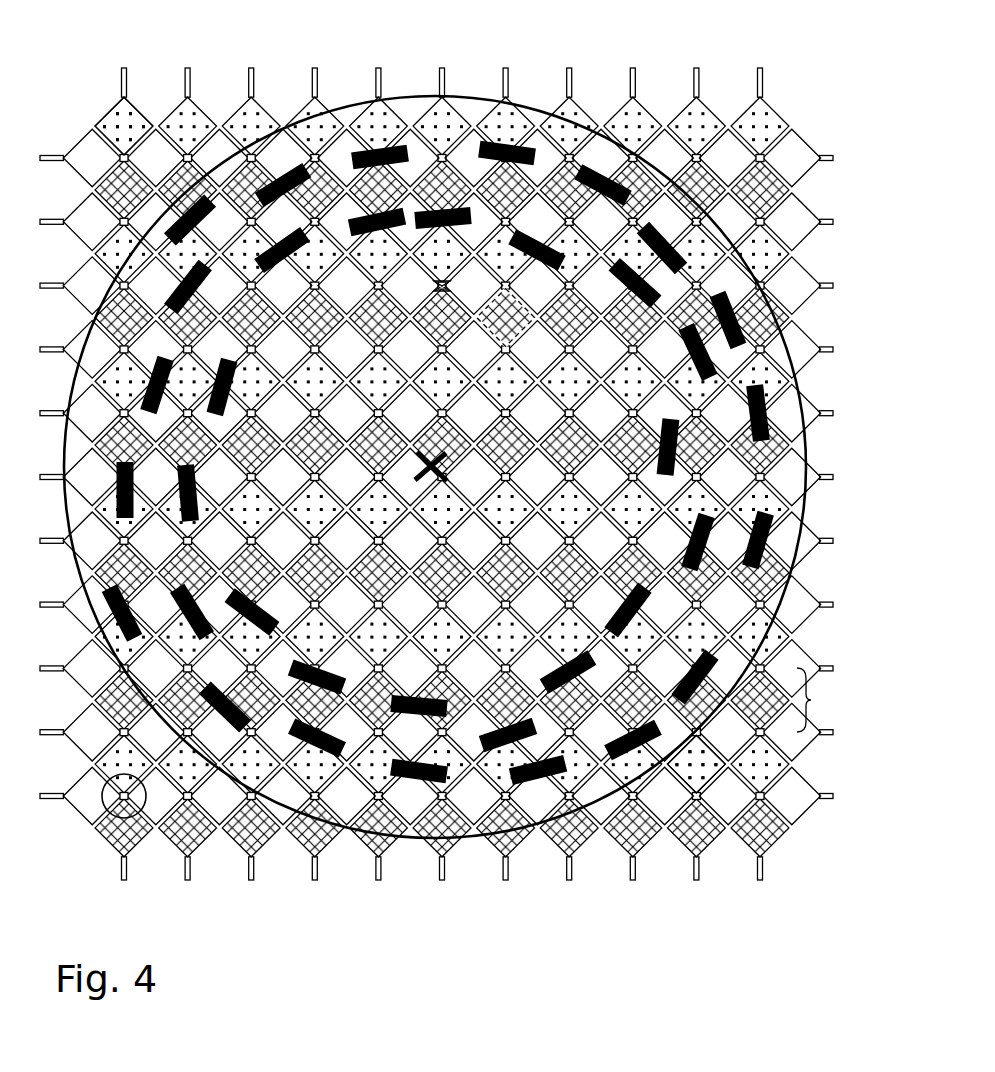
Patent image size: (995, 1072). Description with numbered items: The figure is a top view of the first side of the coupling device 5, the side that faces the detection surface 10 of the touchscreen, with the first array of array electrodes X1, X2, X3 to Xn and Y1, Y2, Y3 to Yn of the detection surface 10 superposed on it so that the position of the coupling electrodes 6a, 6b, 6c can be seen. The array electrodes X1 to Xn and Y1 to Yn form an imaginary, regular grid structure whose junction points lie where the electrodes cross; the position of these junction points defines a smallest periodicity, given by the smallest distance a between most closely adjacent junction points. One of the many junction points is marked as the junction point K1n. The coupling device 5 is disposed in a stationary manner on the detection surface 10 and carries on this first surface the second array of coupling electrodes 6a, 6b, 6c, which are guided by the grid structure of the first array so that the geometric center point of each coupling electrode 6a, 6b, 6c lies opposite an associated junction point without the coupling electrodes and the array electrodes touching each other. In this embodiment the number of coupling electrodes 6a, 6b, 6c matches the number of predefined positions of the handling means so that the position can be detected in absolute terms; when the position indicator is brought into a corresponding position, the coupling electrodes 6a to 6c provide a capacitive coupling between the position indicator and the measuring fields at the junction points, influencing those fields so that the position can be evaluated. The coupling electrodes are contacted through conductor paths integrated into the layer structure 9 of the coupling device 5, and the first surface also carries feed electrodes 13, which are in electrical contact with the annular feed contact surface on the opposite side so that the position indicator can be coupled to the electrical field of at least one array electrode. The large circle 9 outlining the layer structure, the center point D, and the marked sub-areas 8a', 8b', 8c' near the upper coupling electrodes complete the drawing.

The coupling device 5 is at (474, 70).
The coupling electrode 6a is at (508, 146).
The coupling electrode 6b is at (548, 242).
The coupling electrode 6c is at (605, 178).
The first sub-area 8a' is at (476, 231).
The second sub-area 8b' is at (465, 253).
The third sub-area 8c' is at (538, 273).
The layer structure 9 is at (603, 818).
The detection surface 10 is at (755, 771).
The feed electrode 13 is at (108, 134).
The center point D is at (431, 486).
The smallest distance between most closely adjacent junction points a is at (813, 700).
The junction point K1n is at (103, 808).
The array electrode X1 is at (124, 458).
The array electrode X2 is at (188, 458).
The array electrode X3 is at (251, 458).
The array electrode Xn is at (760, 458).
The array electrode Y1 is at (450, 158).
The array electrode Y2 is at (450, 222).
The array electrode Y3 is at (450, 286).
The array electrode Yn is at (450, 796).